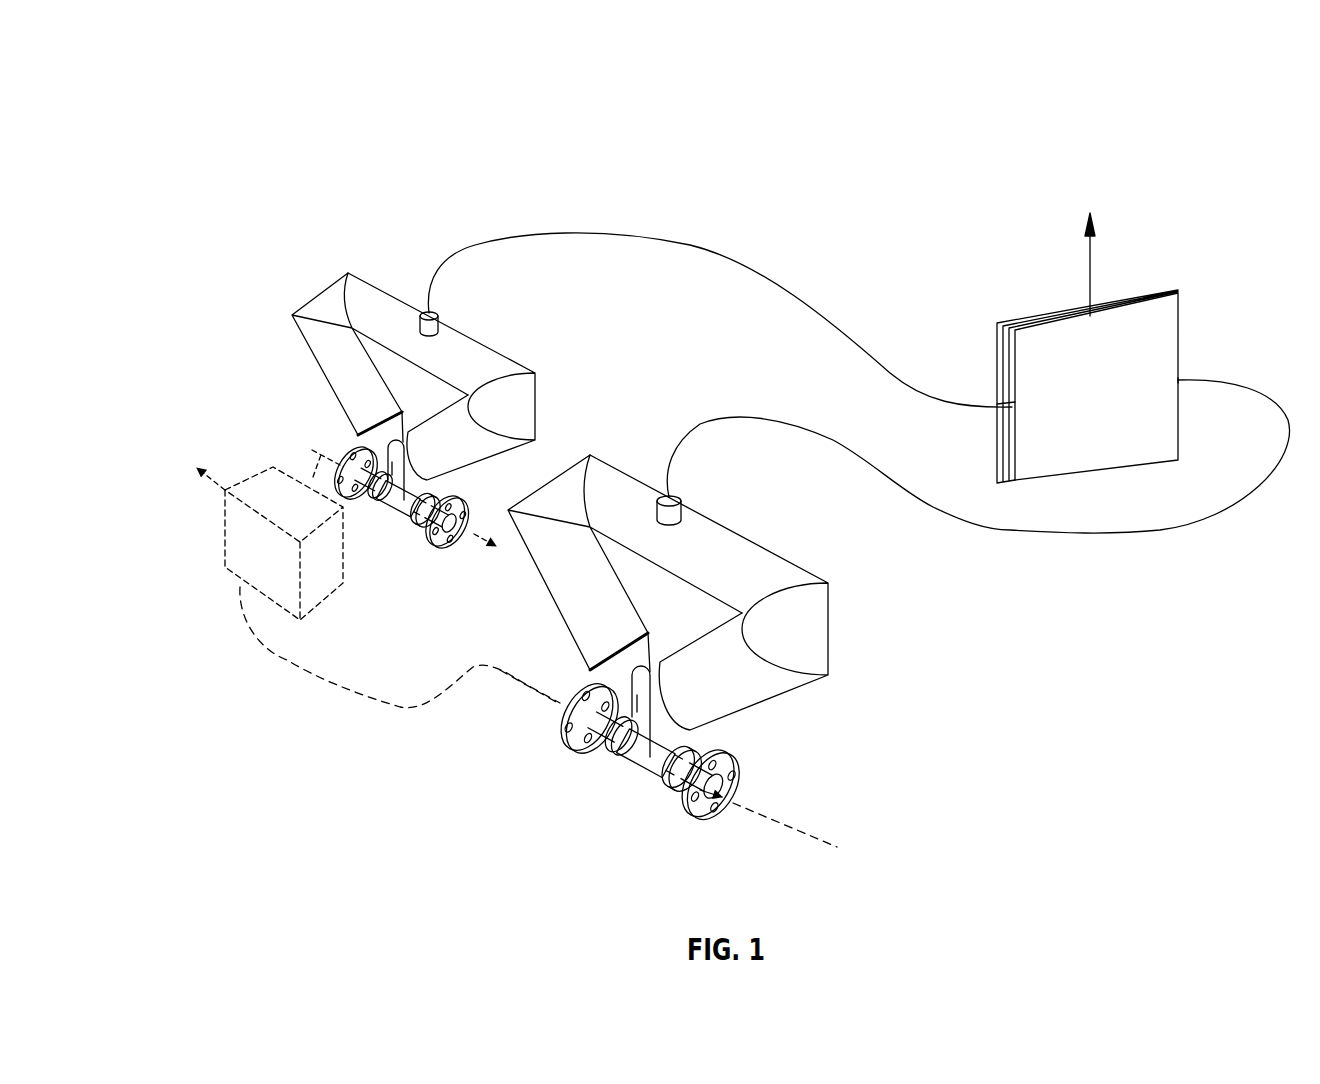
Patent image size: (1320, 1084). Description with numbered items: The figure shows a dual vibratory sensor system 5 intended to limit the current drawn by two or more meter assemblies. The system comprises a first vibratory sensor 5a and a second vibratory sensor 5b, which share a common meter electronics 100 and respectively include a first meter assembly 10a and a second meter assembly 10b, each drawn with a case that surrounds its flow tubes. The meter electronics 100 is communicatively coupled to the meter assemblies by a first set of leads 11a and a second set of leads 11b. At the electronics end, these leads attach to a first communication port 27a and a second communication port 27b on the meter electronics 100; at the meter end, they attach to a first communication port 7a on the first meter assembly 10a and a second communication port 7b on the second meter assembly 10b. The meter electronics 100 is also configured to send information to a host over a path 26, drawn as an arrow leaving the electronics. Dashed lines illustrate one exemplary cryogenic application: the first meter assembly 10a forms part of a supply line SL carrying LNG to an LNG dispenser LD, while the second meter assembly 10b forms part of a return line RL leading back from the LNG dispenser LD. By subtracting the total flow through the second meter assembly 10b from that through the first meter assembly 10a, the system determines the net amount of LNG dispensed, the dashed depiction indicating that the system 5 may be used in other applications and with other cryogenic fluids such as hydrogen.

The dual vibratory sensor system 5 is at (317, 87).
The first vibratory sensor 5a is at (1017, 710).
The second vibratory sensor 5b is at (458, 205).
The first meter assembly 10a is at (790, 697).
The second meter assembly 10b is at (318, 294).
The first communication port 7a is at (690, 497).
The second communication port 7b is at (447, 311).
The first set of leads 11a is at (1003, 540).
The second set of leads 11b is at (762, 258).
The meter electronics 100 is at (1148, 290).
The path 26 is at (1078, 292).
The first communication port 27a is at (990, 380).
The second communication port 27b is at (1193, 363).
The return line RL is at (287, 440).
The LNG dispenser LD is at (215, 565).
The supply line SL is at (390, 723).